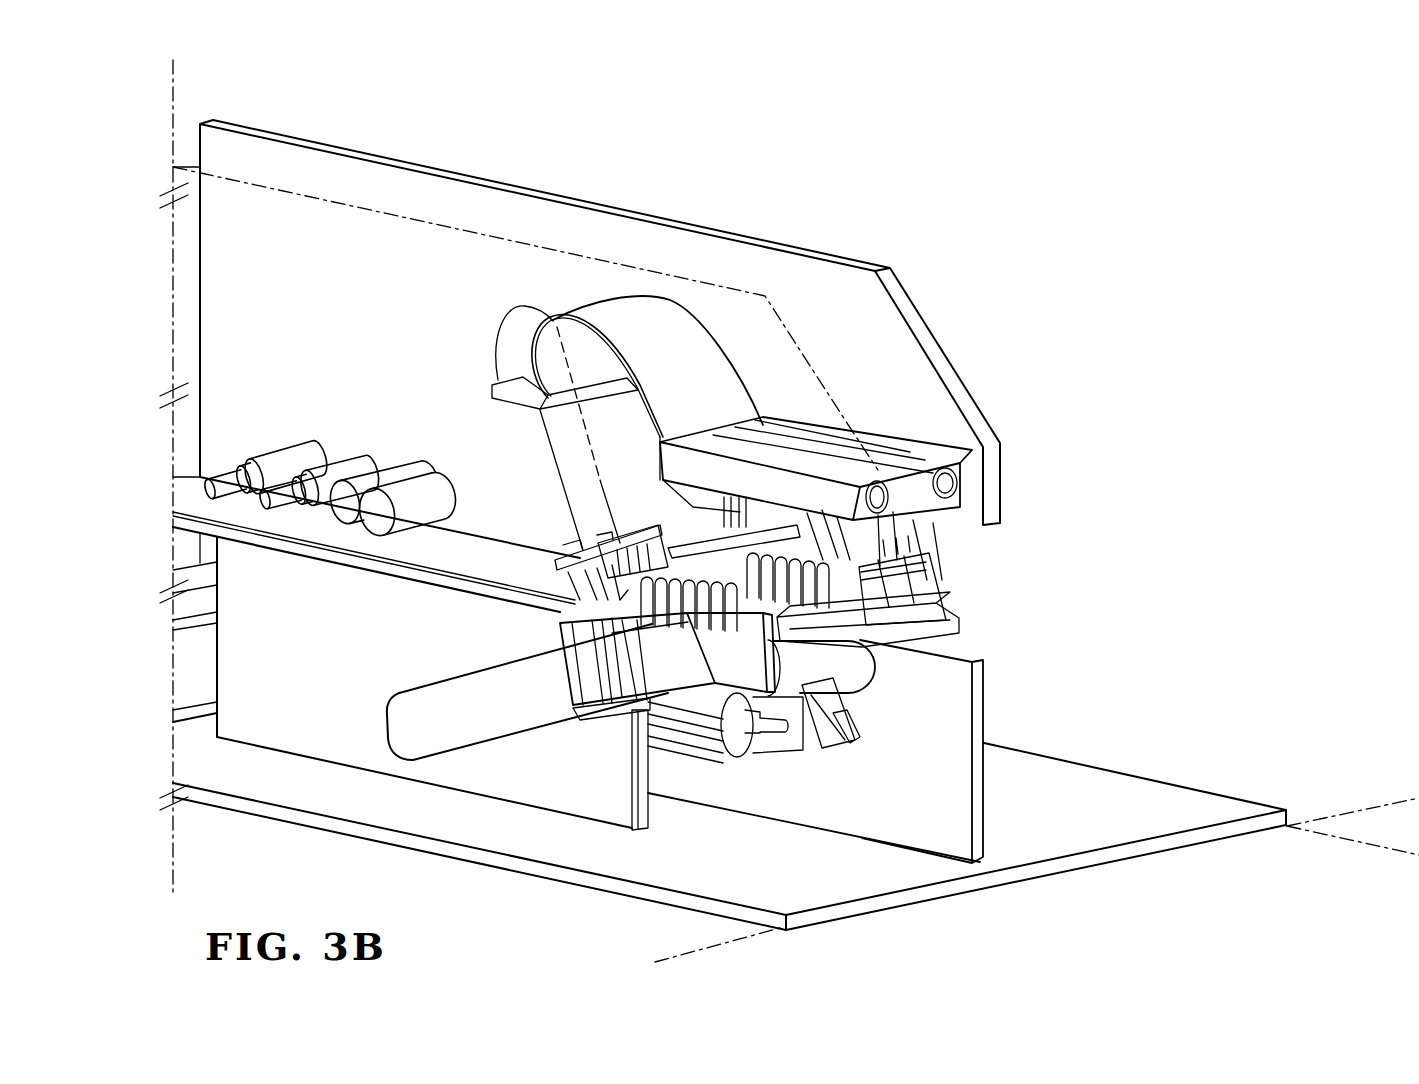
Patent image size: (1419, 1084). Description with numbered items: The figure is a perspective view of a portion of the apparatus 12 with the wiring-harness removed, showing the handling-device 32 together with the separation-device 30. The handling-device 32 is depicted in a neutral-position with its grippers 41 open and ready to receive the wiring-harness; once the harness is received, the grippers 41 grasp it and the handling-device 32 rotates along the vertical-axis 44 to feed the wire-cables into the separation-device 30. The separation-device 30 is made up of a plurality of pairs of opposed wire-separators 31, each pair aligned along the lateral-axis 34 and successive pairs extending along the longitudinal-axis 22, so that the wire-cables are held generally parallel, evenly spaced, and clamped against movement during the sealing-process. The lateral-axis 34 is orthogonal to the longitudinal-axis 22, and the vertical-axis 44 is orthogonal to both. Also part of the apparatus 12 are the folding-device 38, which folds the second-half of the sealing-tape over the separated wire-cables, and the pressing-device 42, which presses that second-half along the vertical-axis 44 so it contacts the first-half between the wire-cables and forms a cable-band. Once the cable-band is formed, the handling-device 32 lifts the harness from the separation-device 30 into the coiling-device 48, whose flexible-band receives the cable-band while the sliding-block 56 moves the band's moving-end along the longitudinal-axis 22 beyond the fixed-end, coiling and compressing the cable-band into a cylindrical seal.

The apparatus 12 is at (917, 187).
The longitudinal-axis 22 is at (1349, 840).
The separation-device 30 is at (747, 667).
The wire-separators 31 is at (707, 618).
The handling-device 32 is at (423, 742).
The lateral-axis 34 is at (1350, 810).
The folding-device 38 is at (905, 628).
The grippers 41 is at (532, 403).
The pressing-device 42 is at (845, 662).
The vertical-axis 44 is at (173, 128).
The coiling-device 48 is at (677, 333).
The sliding-block 56 is at (968, 465).